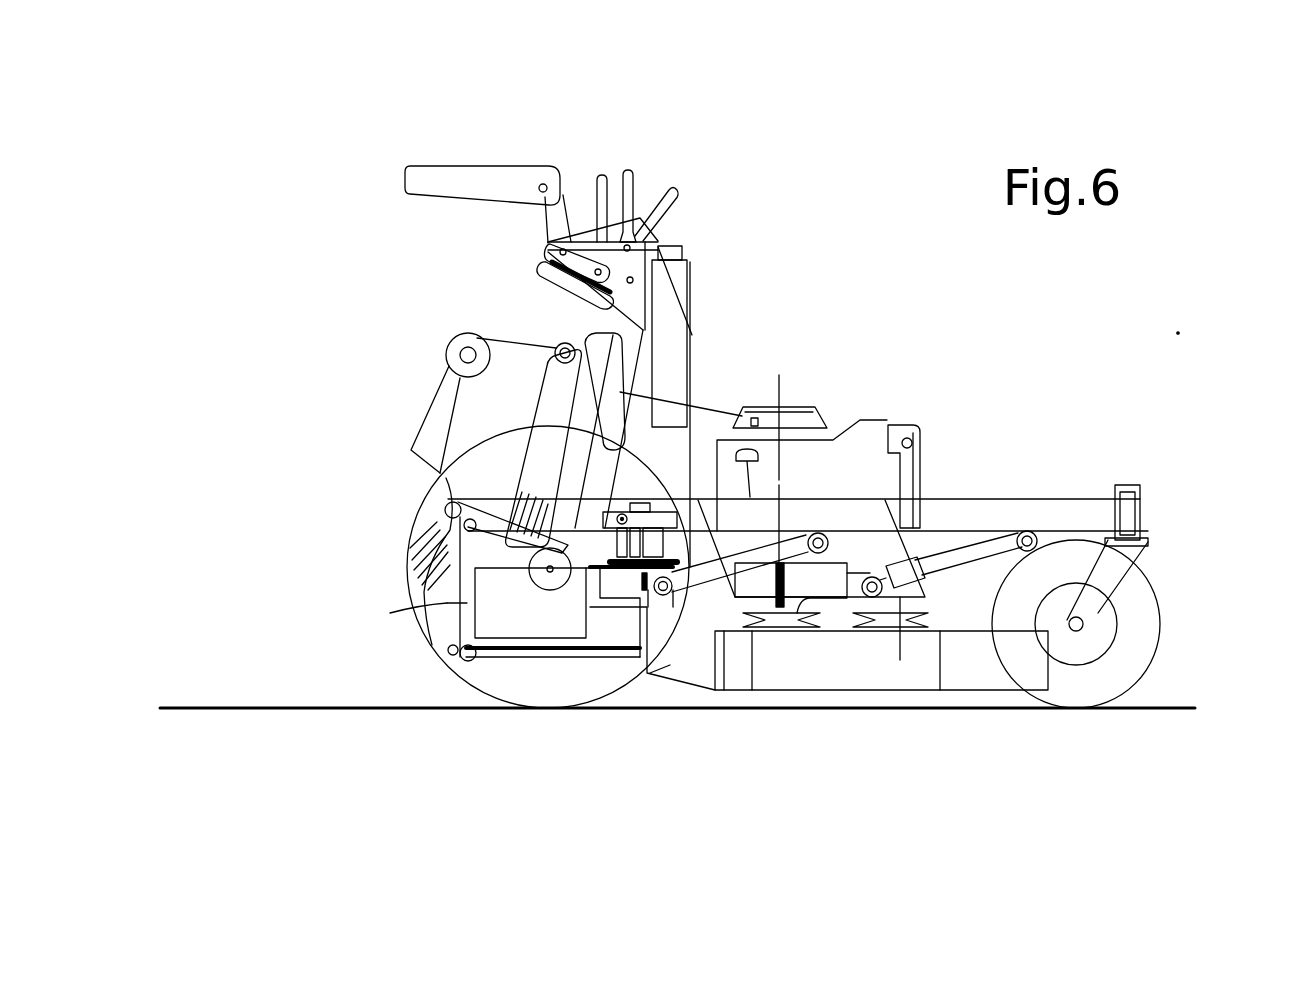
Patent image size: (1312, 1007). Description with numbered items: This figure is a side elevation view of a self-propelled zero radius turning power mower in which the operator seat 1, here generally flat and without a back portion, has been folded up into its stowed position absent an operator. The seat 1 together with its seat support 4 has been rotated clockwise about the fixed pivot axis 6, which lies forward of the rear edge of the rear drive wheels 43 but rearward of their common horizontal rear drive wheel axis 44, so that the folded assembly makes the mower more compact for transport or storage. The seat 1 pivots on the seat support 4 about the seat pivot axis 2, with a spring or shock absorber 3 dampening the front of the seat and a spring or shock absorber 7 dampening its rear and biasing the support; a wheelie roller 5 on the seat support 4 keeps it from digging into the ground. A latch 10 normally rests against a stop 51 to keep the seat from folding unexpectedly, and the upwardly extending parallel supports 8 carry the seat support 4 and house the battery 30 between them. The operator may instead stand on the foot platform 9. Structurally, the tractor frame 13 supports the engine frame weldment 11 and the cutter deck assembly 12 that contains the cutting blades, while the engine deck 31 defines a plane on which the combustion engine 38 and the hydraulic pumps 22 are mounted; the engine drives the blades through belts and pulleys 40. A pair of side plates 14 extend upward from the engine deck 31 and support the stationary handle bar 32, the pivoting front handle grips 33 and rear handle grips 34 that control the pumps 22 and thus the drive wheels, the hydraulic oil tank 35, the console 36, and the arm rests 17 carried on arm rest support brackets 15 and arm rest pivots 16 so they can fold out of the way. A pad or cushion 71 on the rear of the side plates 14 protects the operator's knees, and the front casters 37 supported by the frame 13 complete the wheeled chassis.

The operator seat 1 is at (594, 343).
The seat pivot axis 2 is at (557, 340).
The spring or shock absorber 3 is at (523, 502).
The seat support 4 is at (460, 417).
The wheelie roller 5 is at (455, 336).
The pivot axis 6 is at (430, 505).
The spring or shock absorber 7 is at (448, 602).
The upwardly extending supports 8 is at (470, 598).
The foot platform 9 is at (440, 686).
The latch 10 is at (447, 610).
The engine frame weldment 11 is at (673, 663).
The cutter deck assembly 12 is at (970, 632).
The tractor frame 13 is at (1028, 517).
The side plates 14 is at (650, 520).
The arm rest support bracket 15 is at (567, 257).
The arm rest pivot 16 is at (541, 186).
The arm rest 17 is at (423, 178).
The hydraulic pumps 22 is at (683, 513).
The battery 30 is at (546, 645).
The engine deck 31 is at (733, 600).
The handle bar 32 is at (630, 193).
The front handle grips 33 is at (641, 193).
The rear handle grips 34 is at (600, 192).
The hydraulic oil tank 35 is at (690, 318).
The console 36 is at (576, 226).
The front casters 37 is at (1158, 581).
The combustion engine 38 is at (862, 463).
The belts and pulleys 40 is at (890, 640).
The rear drive wheels 43 is at (472, 673).
The rear drive wheel axis 44 is at (560, 625).
The stop 51 is at (466, 661).
The pad or cushion 71 is at (620, 392).